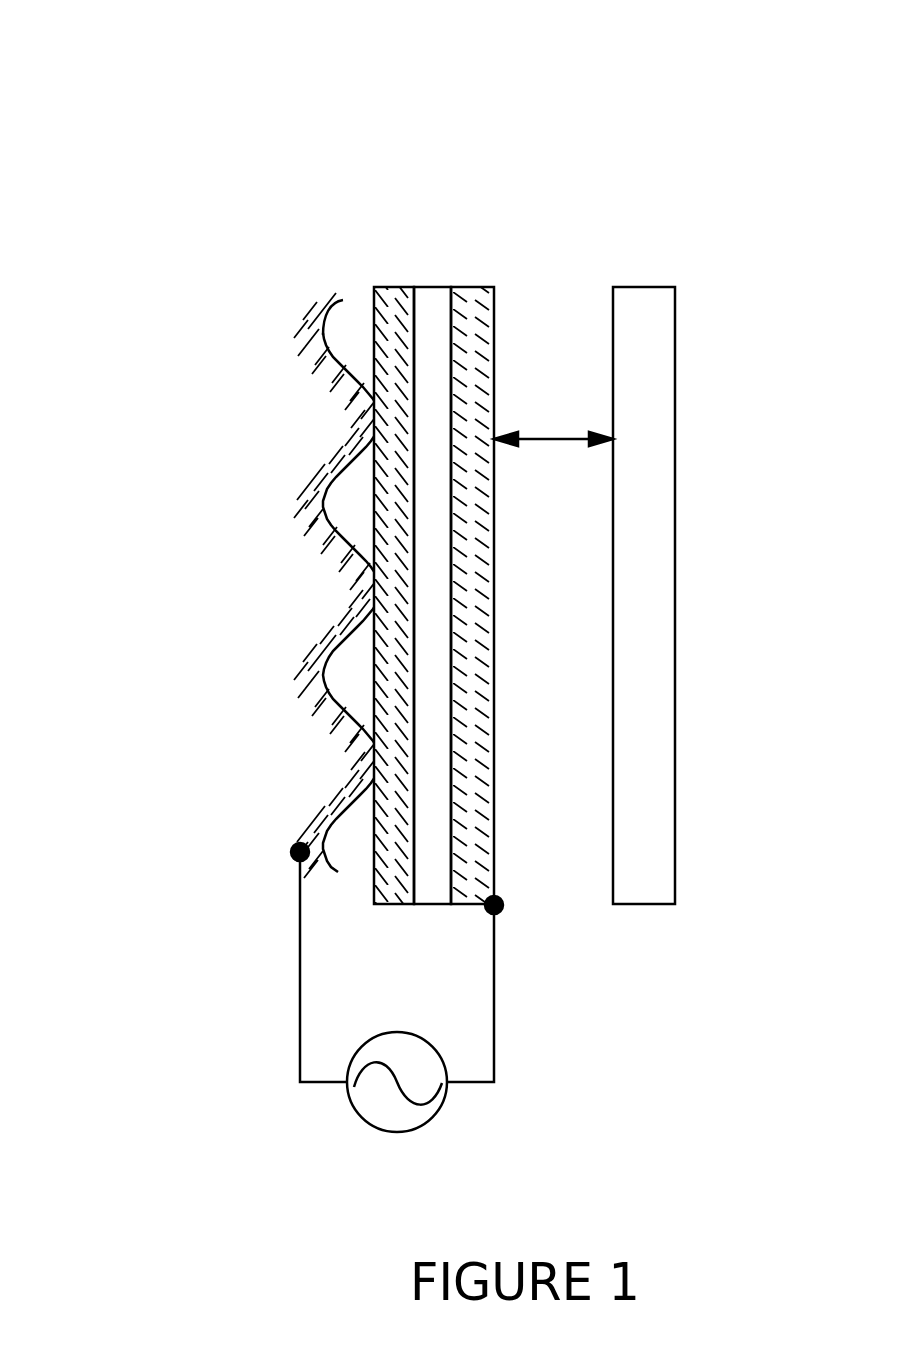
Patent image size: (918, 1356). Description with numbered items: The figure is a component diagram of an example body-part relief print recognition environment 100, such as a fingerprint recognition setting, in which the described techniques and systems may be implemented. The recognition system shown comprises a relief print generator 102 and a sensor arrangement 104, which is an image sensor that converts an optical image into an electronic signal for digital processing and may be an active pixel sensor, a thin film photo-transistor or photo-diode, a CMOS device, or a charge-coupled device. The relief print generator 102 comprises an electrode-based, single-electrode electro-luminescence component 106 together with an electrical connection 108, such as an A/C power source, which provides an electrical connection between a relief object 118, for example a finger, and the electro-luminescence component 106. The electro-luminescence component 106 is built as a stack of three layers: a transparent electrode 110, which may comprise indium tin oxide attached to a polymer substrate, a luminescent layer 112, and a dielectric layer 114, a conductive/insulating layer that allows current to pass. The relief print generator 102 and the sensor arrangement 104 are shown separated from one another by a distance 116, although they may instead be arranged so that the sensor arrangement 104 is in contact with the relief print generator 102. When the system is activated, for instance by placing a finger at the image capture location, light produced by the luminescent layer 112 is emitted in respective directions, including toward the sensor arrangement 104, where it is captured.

The body-part relief print recognition environment 100 is at (118, 83).
The relief print generator 102 is at (533, 1098).
The sensor arrangement 104 is at (675, 904).
The electro-luminescence component 106 is at (490, 187).
The electrical connection 108 is at (390, 1133).
The transparent electrode 110 is at (493, 303).
The luminescent layer 112 is at (427, 300).
The dielectric layer 114 is at (398, 287).
The distance 116 is at (552, 437).
The relief object 118 is at (323, 335).